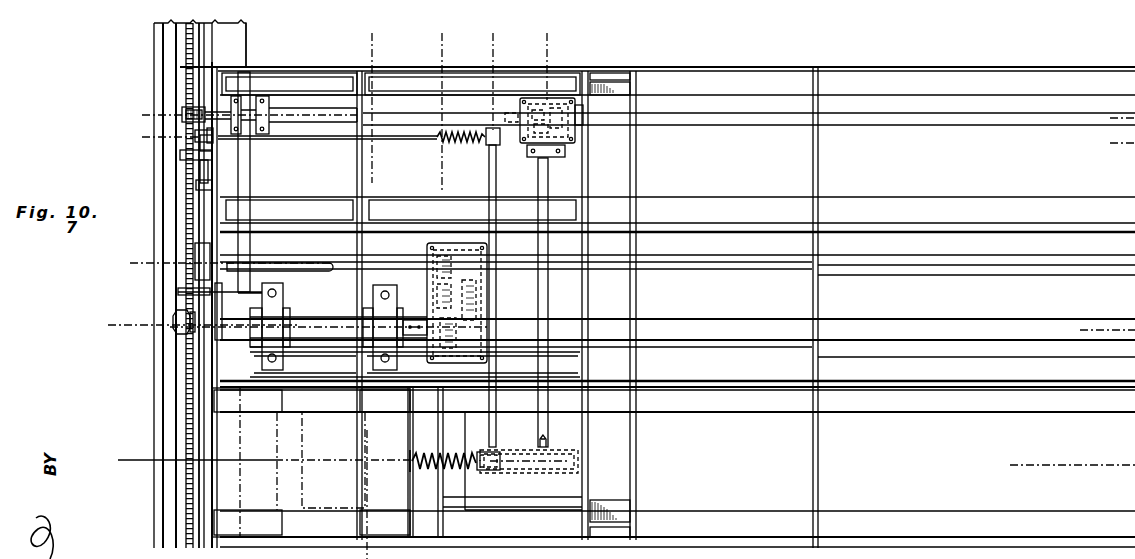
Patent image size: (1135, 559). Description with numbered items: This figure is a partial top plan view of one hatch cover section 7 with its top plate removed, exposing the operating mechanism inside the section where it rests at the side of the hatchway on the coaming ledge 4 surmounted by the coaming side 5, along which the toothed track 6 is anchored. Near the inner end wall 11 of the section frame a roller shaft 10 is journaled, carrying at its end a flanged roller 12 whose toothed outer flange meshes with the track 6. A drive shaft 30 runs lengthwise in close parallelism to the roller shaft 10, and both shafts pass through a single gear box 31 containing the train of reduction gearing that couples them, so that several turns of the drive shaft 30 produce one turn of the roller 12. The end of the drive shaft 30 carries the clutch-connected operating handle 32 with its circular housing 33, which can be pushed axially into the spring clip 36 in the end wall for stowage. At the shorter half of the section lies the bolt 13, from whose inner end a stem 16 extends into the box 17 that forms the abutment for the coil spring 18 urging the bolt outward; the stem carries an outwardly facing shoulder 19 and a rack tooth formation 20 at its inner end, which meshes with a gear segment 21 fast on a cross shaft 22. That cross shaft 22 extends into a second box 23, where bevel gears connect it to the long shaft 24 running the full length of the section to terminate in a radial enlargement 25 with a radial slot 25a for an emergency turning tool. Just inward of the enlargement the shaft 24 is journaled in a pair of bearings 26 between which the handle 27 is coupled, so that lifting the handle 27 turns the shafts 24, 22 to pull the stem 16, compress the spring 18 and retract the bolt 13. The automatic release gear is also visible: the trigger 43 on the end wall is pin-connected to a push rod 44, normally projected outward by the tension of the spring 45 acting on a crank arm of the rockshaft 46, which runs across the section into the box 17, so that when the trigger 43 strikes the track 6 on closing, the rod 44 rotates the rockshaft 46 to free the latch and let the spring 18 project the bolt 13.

The coaming ledge 4 is at (177, 393).
The coaming side 5 is at (155, 421).
The track 6 is at (188, 373).
The cover section 7 is at (899, 65).
The roller shaft 10 is at (710, 318).
The inner end wall 11 is at (118, 458).
The roller 12 is at (197, 318).
The bolt 13 is at (326, 480).
The stem 16 is at (417, 453).
The box 17 is at (138, 262).
The coil spring 18 is at (122, 112).
The shoulder 19 is at (122, 137).
The rack tooth formation 20 is at (558, 42).
The gear segment 21 is at (510, 42).
The cross shaft 22 is at (442, 42).
The box 23 is at (367, 42).
The shaft 24 is at (267, 42).
The radial enlargement 25 is at (186, 110).
The radial slot 25a is at (200, 116).
The bearings 26 is at (245, 103).
The handle 27 is at (250, 205).
The drive shaft 30 is at (682, 265).
The gear box 31 is at (478, 314).
The operating handle 32 is at (208, 168).
The housing 33 is at (200, 258).
The spring clip 36 is at (198, 184).
The trigger 43 is at (212, 140).
The push rod 44 is at (300, 138).
The spring 45 is at (476, 142).
The rockshaft 46 is at (489, 205).